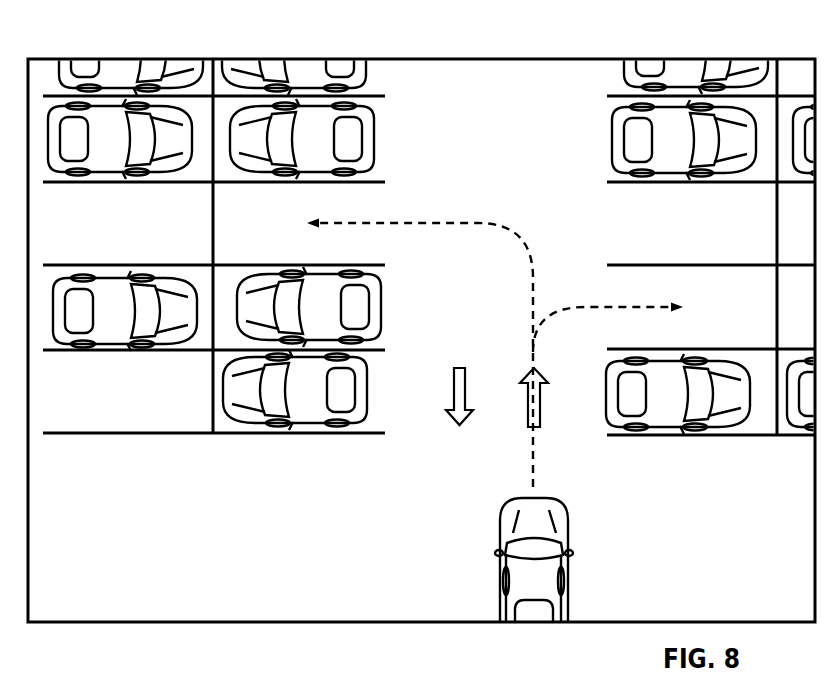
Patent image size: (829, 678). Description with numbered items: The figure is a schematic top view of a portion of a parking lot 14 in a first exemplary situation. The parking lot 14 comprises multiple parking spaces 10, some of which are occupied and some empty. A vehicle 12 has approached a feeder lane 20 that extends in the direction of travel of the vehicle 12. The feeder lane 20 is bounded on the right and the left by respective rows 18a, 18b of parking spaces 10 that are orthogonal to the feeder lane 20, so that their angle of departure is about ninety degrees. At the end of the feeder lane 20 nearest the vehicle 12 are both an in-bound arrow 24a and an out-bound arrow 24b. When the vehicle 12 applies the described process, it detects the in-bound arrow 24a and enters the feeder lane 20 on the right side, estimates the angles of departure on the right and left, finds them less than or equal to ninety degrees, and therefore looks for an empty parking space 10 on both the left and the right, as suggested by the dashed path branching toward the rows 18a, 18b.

The parking lot 14 is at (210, 48).
The parking space 10 is at (156, 409).
The vehicle 12 is at (560, 485).
The row of parking spaces 18a is at (681, 462).
The row of parking spaces 18b is at (315, 462).
The feeder lane 20 is at (491, 296).
The in-bound arrow 24a is at (528, 372).
The out-bound arrow 24b is at (455, 387).